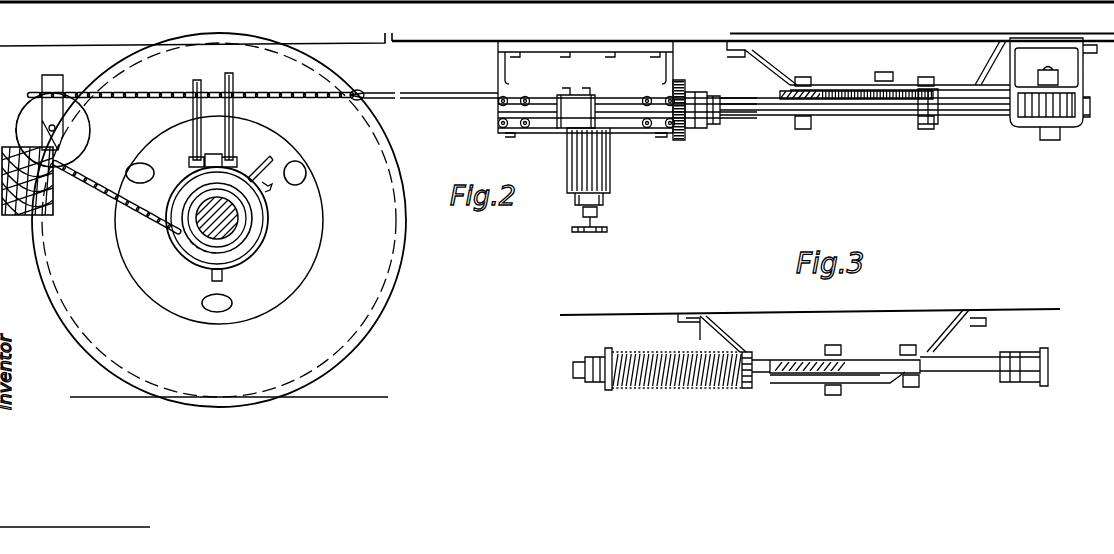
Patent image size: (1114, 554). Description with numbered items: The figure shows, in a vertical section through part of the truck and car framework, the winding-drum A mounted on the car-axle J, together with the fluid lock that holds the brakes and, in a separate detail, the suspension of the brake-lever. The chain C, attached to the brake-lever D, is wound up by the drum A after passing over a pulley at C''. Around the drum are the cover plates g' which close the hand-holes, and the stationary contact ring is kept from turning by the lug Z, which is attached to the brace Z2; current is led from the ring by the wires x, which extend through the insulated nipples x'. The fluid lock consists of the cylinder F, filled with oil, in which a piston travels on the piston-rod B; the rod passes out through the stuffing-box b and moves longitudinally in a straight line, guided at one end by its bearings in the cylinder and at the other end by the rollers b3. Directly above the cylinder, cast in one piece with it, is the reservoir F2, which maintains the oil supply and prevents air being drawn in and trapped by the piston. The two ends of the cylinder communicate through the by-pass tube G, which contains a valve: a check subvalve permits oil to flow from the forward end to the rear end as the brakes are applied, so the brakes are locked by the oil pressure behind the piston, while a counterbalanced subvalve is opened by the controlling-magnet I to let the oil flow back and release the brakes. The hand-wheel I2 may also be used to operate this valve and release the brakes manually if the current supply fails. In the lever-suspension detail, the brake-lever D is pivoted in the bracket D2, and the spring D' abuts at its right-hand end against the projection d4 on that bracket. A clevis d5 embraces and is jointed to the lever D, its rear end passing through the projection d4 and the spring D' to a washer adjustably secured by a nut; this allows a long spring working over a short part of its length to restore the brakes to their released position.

In FIG. 2, the winding-drum A is at (219, 220).
In FIG. 2, the car-axle J is at (228, 224).
In FIG. 2, the wires x is at (220, 116).
In FIG. 2, the insulated nipples x' is at (214, 162).
In FIG. 2, the brace Z2 is at (262, 160).
In FIG. 2, the lug Z is at (273, 197).
In FIG. 2, the plate g' is at (216, 236).
In FIG. 2, the chain C is at (263, 176).
In FIG. 2, the pulley C'' is at (46, 148).
In FIG. 2, the reservoir F2 is at (585, 87).
In FIG. 2, the cylinder F is at (542, 133).
In FIG. 2, the by-pass tube G is at (617, 107).
In FIG. 2, the controlling-magnet I is at (611, 170).
In FIG. 2, the hand-wheel I2 is at (606, 230).
In FIG. 2, the stuffing-box b is at (696, 104).
In FIG. 2, the piston-rod B is at (752, 119).
In FIG. 2, the rollers b3 is at (1042, 110).
In FIG. 3, the spring D' is at (657, 358).
In FIG. 3, the projection d4 is at (746, 352).
In FIG. 3, the brake-lever D is at (836, 362).
In FIG. 3, the clevis d5 is at (773, 380).
In FIG. 3, the bracket D2 is at (937, 350).